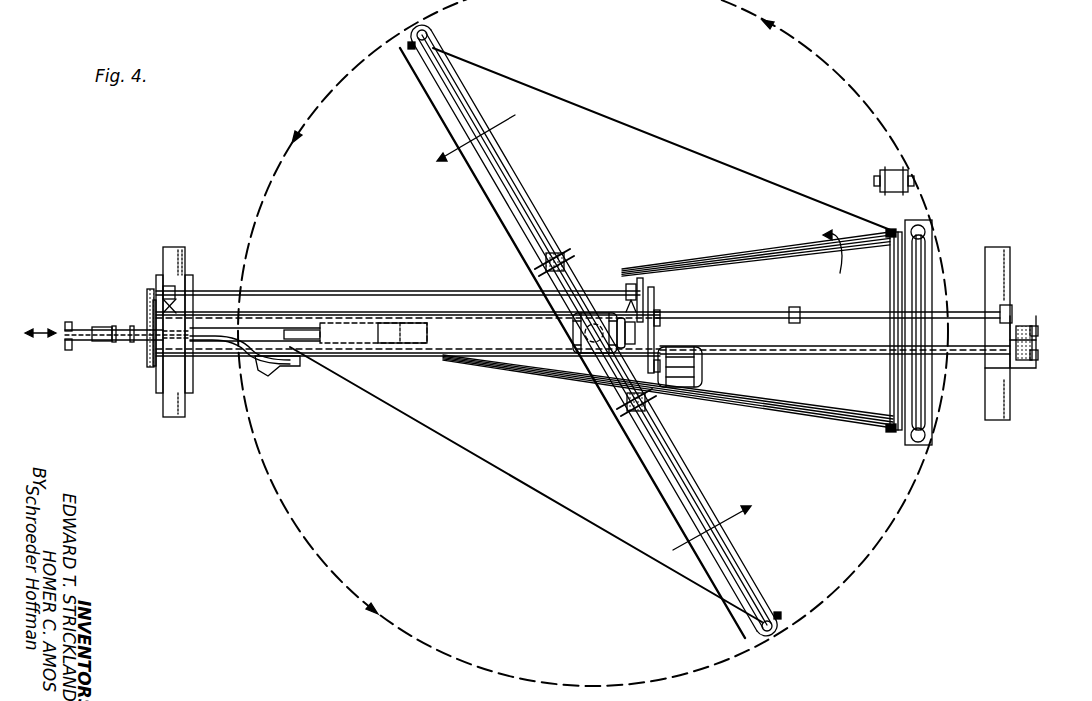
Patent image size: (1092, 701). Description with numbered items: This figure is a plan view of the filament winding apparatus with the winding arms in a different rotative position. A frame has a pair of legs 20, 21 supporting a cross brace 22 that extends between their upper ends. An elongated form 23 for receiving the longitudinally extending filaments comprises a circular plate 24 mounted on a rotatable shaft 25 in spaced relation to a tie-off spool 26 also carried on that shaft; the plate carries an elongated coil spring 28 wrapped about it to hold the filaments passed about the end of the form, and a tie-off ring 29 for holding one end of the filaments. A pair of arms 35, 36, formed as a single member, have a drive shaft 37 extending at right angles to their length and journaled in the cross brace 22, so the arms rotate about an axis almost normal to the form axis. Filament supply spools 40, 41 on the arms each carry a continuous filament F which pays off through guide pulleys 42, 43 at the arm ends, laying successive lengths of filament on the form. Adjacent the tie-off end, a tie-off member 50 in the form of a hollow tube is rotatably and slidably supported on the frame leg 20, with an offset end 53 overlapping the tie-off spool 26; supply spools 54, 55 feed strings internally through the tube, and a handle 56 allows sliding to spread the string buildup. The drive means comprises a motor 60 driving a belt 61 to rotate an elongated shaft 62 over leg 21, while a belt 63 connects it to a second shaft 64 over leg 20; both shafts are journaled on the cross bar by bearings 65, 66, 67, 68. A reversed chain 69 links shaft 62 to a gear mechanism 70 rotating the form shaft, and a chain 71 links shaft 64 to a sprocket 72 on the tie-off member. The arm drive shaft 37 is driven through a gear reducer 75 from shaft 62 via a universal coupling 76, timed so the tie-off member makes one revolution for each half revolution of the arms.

The frame leg 20 is at (185, 406).
The frame leg 21 is at (1004, 410).
The cross brace 22 is at (480, 320).
The elongated form 23 is at (495, 378).
The circular plate 24 is at (895, 432).
The rotatable shaft 25 is at (414, 350).
The tie-off spool 26 is at (318, 312).
The coil spring 28 is at (908, 256).
The tie-off ring 29 is at (886, 432).
The arm 35 is at (522, 194).
The arm 36 is at (664, 493).
The drive shaft 37 is at (560, 333).
The filament supply spool 40 is at (616, 412).
The filament supply spool 41 is at (572, 252).
The guide pulley 42 is at (432, 33).
The guide pulley 43 is at (408, 48).
The tie-off member 50 is at (143, 338).
The end of tie-off member 53 is at (275, 366).
The supply spool 54 is at (71, 321).
The supply spool 55 is at (71, 349).
The handle 56 is at (122, 328).
The motor 60 is at (700, 364).
The belt 61 is at (655, 300).
The drive shaft 62 is at (772, 311).
The belt 63 is at (641, 280).
The drive shaft 64 is at (280, 292).
The bearing 65 is at (796, 308).
The bearing 66 is at (1008, 305).
The bearing 67 is at (630, 284).
The bearing 68 is at (165, 288).
The reversed chain 69 is at (1034, 344).
The gear mechanism 70 is at (1018, 366).
The chain 71 is at (147, 306).
The sprocket 72 is at (150, 366).
The gear reducer 75 is at (585, 345).
The universal coupling 76 is at (626, 326).
The continuous filament F is at (700, 148).